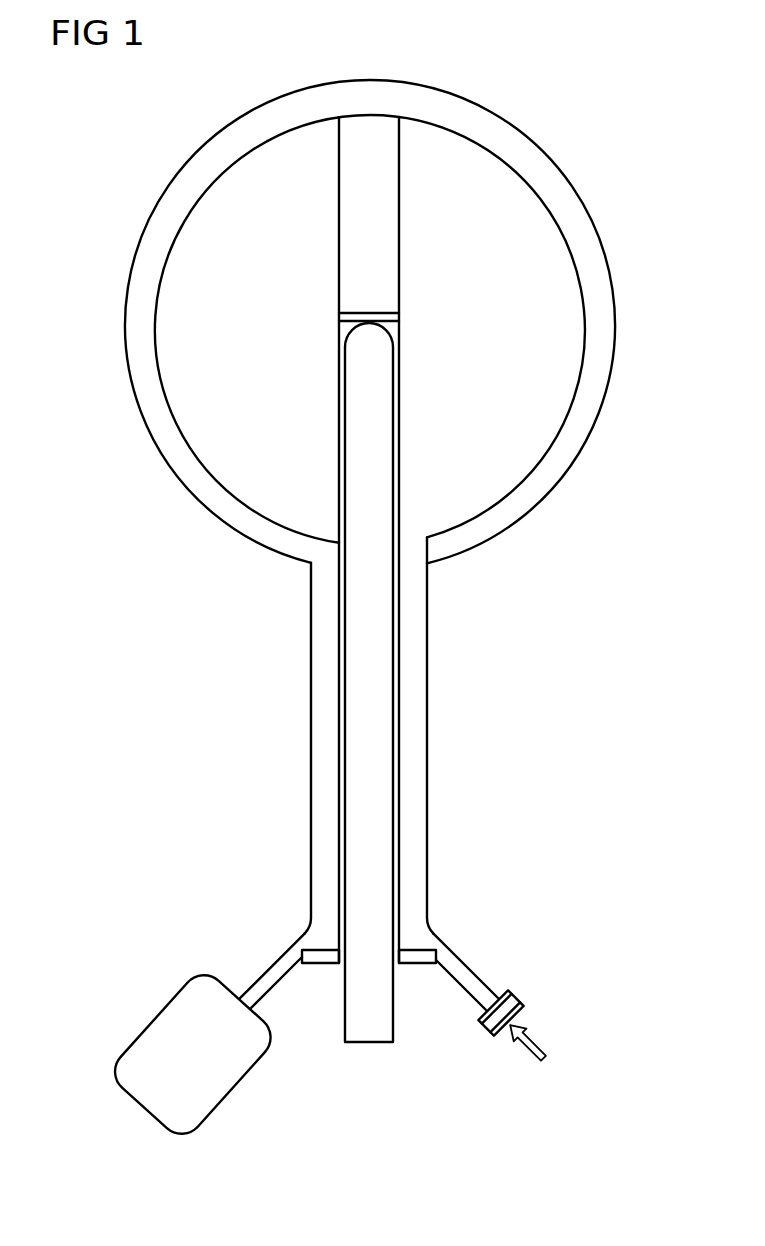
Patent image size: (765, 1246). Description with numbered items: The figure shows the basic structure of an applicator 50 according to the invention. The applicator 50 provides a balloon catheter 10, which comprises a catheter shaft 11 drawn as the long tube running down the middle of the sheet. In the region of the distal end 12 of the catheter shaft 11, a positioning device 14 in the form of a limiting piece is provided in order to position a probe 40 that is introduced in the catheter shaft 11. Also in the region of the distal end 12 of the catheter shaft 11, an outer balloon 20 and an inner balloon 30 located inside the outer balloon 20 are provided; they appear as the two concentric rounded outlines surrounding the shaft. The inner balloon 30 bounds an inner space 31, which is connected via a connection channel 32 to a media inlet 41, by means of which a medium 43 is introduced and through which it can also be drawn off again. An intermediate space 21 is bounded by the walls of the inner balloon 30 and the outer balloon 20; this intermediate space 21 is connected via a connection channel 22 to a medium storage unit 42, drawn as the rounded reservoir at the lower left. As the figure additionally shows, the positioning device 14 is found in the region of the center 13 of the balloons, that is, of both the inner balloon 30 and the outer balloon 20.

The balloon catheter 10 is at (464, 89).
The catheter shaft 11 is at (398, 888).
The distal end 12 is at (310, 268).
The center 13 is at (302, 314).
The positioning device 14 is at (400, 321).
The outer balloon 20 is at (124, 308).
The intermediate space 21 is at (138, 371).
The connection channel 22 is at (320, 752).
The inner balloon 30 is at (168, 257).
The inner space 31 is at (566, 392).
The connection channel 32 is at (420, 752).
The probe 40 is at (372, 1035).
The media inlet 41 is at (465, 973).
The medium storage unit 42 is at (147, 1110).
The medium 43 is at (537, 1045).
The applicator 50 is at (182, 632).